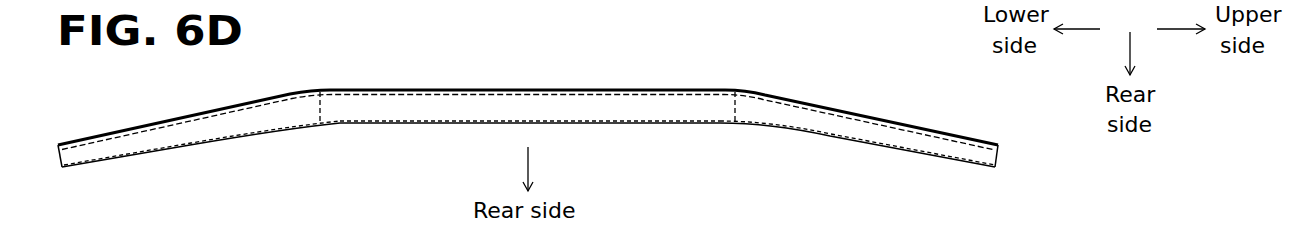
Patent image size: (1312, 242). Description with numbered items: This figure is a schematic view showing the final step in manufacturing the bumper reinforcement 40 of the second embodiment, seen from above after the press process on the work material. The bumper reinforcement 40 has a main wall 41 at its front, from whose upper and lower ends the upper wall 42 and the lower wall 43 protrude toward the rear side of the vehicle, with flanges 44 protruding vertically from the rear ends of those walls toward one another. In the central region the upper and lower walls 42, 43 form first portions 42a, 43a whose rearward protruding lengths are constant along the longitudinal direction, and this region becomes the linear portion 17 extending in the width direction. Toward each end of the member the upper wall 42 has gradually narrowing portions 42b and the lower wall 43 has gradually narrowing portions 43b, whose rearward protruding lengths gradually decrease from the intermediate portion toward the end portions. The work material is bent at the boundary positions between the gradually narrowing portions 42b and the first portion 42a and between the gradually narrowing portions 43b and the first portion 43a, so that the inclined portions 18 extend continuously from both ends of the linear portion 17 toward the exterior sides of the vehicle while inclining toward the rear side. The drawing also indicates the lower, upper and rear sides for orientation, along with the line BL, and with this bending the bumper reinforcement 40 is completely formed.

The bumper reinforcement 40 is at (528, 118).
The linear portion 17 is at (660, 90).
The main wall 41 is at (590, 90).
The upper wall 42 is at (527, 84).
The lower wall 43 is at (387, 107).
The first portion 42a is at (530, 141).
The first portion 43a is at (617, 110).
The gradually narrowing portion 42b is at (528, 131).
The gradually narrowing portion 43b is at (178, 130).
The inclined portion 18 is at (127, 131).
The flange 44 is at (1129, 5).
The belt line BL is at (804, 6).